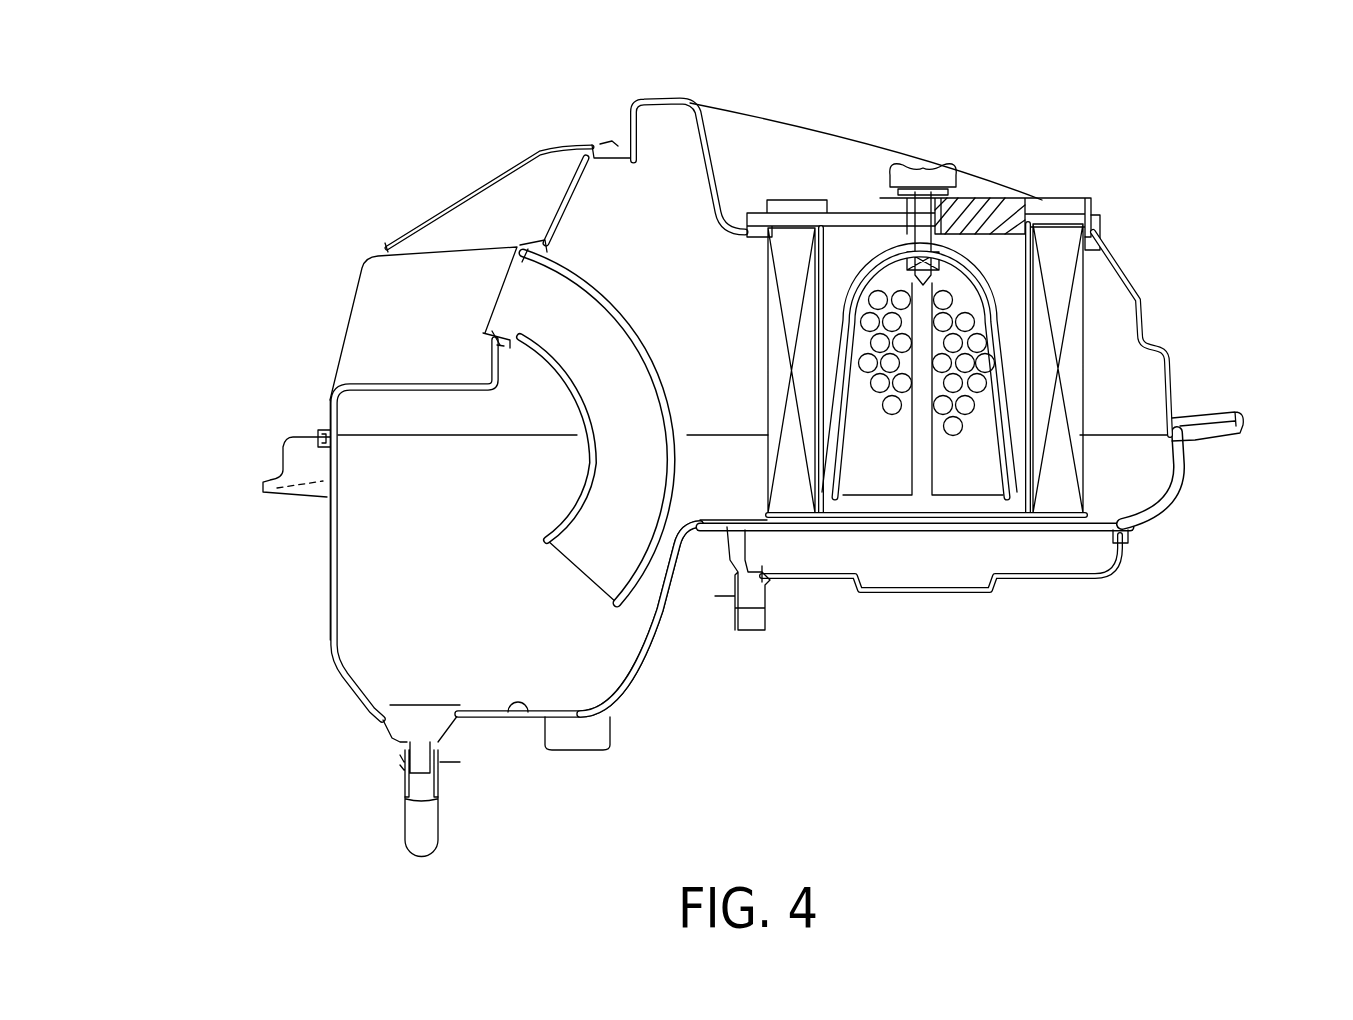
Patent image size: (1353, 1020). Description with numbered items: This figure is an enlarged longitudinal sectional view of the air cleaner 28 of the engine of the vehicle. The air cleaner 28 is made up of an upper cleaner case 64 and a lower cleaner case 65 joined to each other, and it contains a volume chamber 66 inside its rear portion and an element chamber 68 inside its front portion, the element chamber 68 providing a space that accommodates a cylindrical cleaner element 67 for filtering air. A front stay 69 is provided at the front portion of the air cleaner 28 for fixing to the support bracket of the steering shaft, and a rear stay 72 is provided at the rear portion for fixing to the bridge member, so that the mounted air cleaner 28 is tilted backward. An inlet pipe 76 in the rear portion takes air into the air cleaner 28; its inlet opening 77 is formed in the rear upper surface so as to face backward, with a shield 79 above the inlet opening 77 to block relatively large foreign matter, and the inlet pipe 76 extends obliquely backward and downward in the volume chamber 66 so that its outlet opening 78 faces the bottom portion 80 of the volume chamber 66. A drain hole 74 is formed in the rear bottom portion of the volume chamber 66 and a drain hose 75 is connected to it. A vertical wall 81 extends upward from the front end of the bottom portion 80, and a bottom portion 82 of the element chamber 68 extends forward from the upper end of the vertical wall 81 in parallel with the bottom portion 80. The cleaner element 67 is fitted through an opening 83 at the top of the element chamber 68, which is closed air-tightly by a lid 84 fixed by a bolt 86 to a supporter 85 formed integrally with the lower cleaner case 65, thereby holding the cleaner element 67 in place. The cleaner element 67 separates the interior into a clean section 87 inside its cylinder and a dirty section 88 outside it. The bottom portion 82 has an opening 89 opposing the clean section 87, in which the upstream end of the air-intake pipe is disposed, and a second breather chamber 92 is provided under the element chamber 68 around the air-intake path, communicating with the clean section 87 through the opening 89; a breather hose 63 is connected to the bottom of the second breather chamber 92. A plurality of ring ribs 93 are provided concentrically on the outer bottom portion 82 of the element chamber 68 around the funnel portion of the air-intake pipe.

The air cleaner 28 is at (849, 96).
The breather hose 63 is at (734, 616).
The upper cleaner case 64 is at (327, 414).
The lower cleaner case 65 is at (331, 564).
The volume chamber 66 is at (380, 633).
The cleaner element 67 is at (1070, 324).
The element chamber 68 is at (1007, 246).
The front stay 69 is at (1235, 413).
The rear stay 72 is at (280, 465).
The drain hole 74 is at (420, 767).
The drain hose 75 is at (432, 829).
The inlet pipe 76 is at (621, 286).
The inlet opening 77 is at (510, 303).
The outlet opening 78 is at (582, 600).
The shield 79 is at (476, 197).
The bottom portion of the volume chamber 80 is at (522, 718).
The vertical wall 81 is at (652, 608).
The bottom portion of the element chamber 82 is at (1125, 516).
The opening 83 is at (771, 242).
The lid 84 is at (988, 214).
The supporter 85 is at (863, 254).
The bolt 86 is at (963, 198).
The clean section 87 is at (962, 471).
The dirty section 88 is at (746, 488).
The opening 89 is at (842, 512).
The second breather chamber 92 is at (1092, 553).
The ring ribs 93 is at (1019, 534).